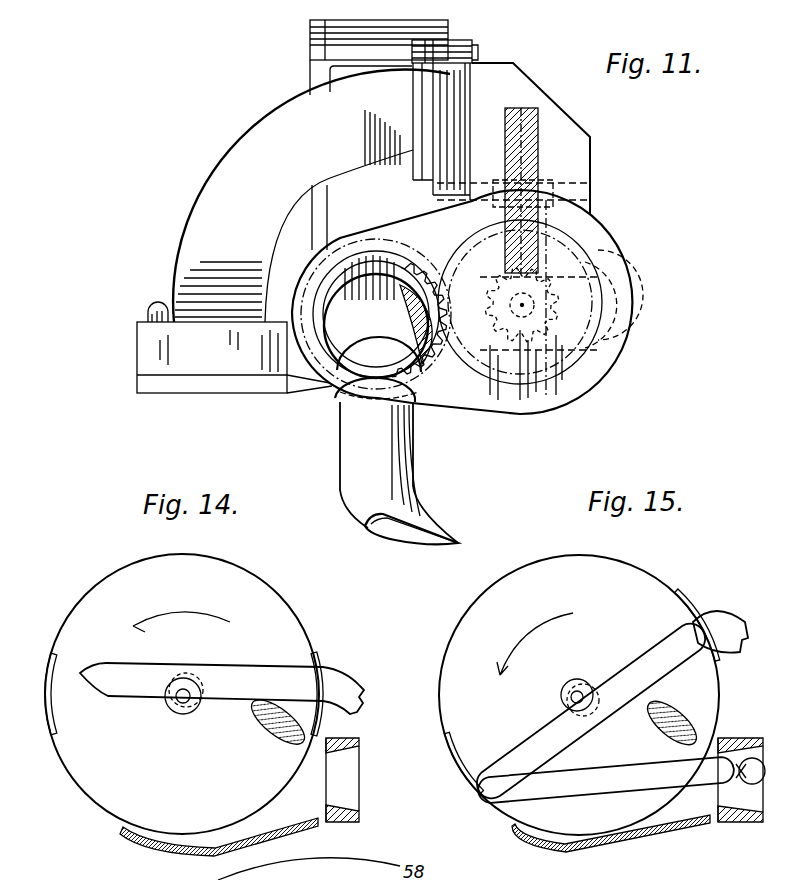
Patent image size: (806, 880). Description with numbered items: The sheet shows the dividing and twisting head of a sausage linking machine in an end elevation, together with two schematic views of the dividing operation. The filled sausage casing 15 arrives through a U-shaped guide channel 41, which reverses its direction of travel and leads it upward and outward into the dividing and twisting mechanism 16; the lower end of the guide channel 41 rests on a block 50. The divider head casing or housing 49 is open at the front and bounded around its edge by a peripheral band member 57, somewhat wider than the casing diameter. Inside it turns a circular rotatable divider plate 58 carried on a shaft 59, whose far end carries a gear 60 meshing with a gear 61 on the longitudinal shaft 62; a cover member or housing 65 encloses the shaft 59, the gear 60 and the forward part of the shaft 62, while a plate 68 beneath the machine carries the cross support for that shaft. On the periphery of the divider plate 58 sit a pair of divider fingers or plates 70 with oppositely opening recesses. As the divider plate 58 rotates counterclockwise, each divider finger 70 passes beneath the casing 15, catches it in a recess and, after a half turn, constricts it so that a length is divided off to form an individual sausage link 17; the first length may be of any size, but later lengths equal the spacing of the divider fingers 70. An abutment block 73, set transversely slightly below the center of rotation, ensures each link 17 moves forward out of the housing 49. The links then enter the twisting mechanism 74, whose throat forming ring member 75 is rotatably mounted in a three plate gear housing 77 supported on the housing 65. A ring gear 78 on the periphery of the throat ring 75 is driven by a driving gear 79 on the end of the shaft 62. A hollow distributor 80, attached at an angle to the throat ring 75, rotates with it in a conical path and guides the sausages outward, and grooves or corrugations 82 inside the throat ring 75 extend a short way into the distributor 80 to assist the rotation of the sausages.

In FIG. 14, the filled sausage casing 15 is at (357, 686).
In FIG. 15, the filled sausage casing 15 is at (738, 625).
In FIG. 11, the dividing and twisting mechanism 16 is at (312, 21).
In FIG. 15, the sausage link 17 is at (623, 795).
In FIG. 11, the guide channel 41 is at (241, 141).
In FIG. 11, the divider head casing or housing 49 is at (364, 52).
In FIG. 11, the block 50 is at (152, 358).
In FIG. 14, the peripheral band member 57 is at (270, 832).
In FIG. 15, the peripheral band member 57 is at (665, 834).
In FIG. 14, the rotatable divider plate 58 is at (279, 596).
In FIG. 15, the rotatable divider plate 58 is at (528, 566).
In FIG. 11, the shaft 59 is at (565, 182).
In FIG. 11, the gear 60 is at (540, 117).
In FIG. 11, the gear 61 is at (538, 305).
In FIG. 11, the longitudinal shaft 62 is at (546, 352).
In FIG. 11, the cover member or housing 65 is at (591, 136).
In FIG. 11, the plate 68 is at (298, 390).
In FIG. 14, the divider fingers or plates 70 is at (47, 680).
In FIG. 15, the divider fingers or plates 70 is at (683, 598).
In FIG. 14, the abutment block 73 is at (263, 736).
In FIG. 15, the abutment block 73 is at (672, 706).
In FIG. 11, the twisting mechanism 74 is at (335, 278).
In FIG. 14, the throat forming ring member 75 is at (362, 752).
In FIG. 15, the throat forming ring member 75 is at (752, 740).
In FIG. 11, the three plate gear housing 77 is at (598, 236).
In FIG. 11, the ring gear 78 is at (418, 255).
In FIG. 11, the driving gear 79 is at (452, 357).
In FIG. 11, the hollow distributor 80 is at (345, 476).
In FIG. 11, the grooves or corrugations 82 is at (333, 398).